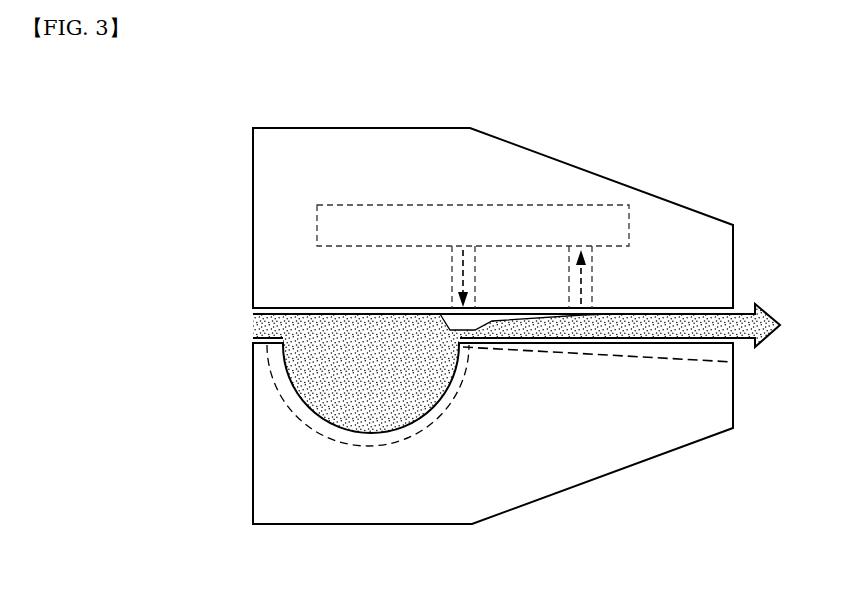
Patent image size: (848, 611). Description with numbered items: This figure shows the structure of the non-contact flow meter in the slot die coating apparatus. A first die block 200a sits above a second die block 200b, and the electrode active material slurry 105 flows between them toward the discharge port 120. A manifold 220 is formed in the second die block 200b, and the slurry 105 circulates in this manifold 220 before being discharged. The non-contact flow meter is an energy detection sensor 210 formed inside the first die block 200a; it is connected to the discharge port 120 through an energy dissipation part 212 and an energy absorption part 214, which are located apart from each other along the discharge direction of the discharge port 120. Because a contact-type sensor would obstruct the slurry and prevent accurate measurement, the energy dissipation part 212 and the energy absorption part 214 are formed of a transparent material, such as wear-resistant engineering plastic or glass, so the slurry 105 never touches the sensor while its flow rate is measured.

The first die block 200a is at (563, 162).
The second die block 200b is at (540, 499).
The energy detection sensor 210 is at (413, 205).
The energy dissipation part 212 is at (452, 283).
The energy absorption part 214 is at (592, 283).
The electrode active material slurry 105 is at (618, 328).
The discharge port 120 is at (697, 363).
The manifold 220 is at (350, 446).